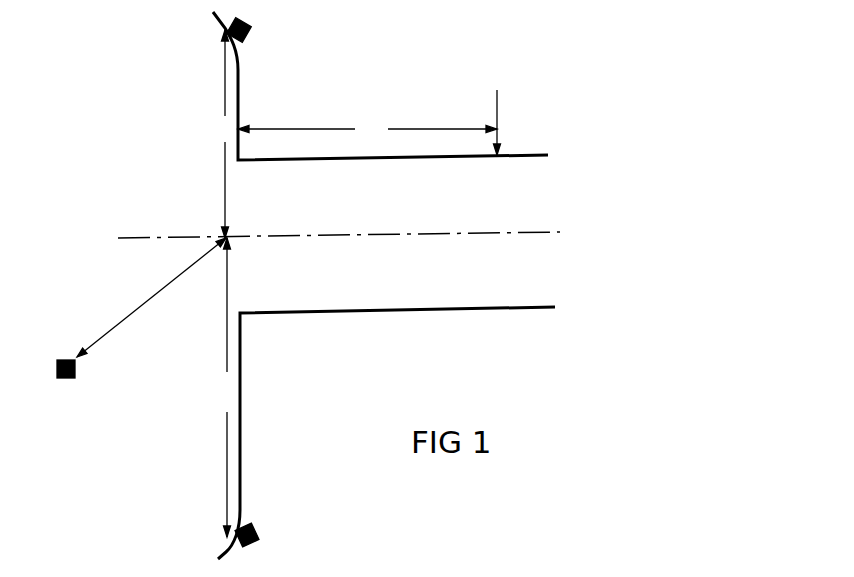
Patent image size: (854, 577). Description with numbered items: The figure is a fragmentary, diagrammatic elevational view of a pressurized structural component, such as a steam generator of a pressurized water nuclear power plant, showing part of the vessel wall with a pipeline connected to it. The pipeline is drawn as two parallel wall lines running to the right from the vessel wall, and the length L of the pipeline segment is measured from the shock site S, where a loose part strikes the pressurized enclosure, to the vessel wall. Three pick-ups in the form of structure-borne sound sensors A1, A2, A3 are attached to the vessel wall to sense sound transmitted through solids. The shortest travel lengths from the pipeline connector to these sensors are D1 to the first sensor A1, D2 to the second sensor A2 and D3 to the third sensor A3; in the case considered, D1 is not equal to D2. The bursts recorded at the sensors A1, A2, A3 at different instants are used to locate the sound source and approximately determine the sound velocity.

The structure-borne sound sensor A1 is at (248, 24).
The structure-borne sound sensor A2 is at (257, 537).
The structure-borne sound sensor A3 is at (66, 378).
The shortest travel length D1 is at (225, 134).
The shortest travel length D2 is at (226, 387).
The shortest travel length D3 is at (151, 297).
The length of the pipeline segment L is at (367, 131).
The shock site S is at (496, 110).